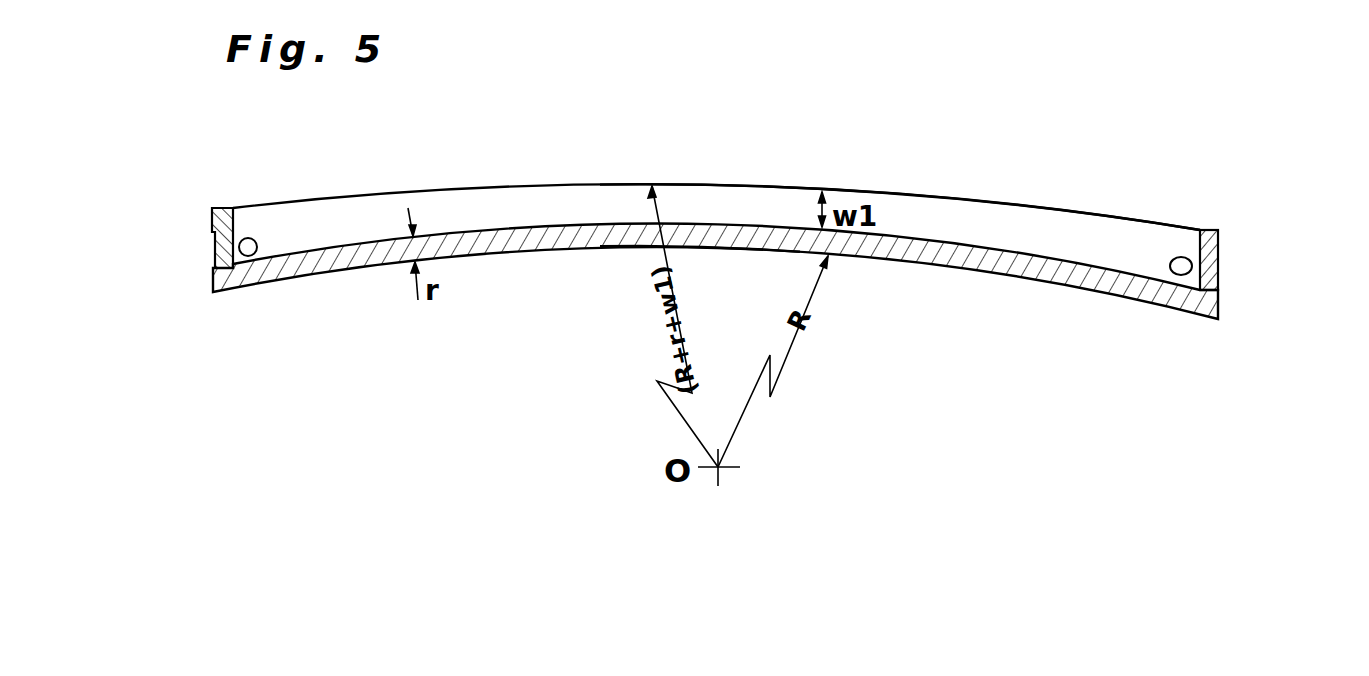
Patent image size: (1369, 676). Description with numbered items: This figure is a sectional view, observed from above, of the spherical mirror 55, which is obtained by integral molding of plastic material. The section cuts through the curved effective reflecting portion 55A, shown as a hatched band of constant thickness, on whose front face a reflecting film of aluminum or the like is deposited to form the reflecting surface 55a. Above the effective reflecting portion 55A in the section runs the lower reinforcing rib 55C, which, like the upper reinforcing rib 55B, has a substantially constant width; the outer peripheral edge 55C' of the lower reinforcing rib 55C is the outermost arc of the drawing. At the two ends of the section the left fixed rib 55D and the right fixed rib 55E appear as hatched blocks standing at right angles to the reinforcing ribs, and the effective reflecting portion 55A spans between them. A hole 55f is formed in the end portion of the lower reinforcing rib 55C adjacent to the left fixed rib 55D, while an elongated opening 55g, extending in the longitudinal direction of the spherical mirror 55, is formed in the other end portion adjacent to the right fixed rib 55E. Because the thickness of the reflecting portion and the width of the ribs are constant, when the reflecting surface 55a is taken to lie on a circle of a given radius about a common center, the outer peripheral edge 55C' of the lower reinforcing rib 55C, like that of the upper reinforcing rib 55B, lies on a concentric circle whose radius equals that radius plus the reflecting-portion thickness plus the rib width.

The spherical mirror 55 is at (503, 186).
The effective reflecting portion 55A is at (552, 230).
The reflecting surface 55a is at (712, 248).
The upper reinforcing rib 55B is at (810, 16).
The lower reinforcing rib 55C is at (1050, 169).
The outer peripheral edge of lower reinforcing rib 55C' is at (750, 150).
The left fixed rib 55D is at (213, 248).
The right fixed rib 55E is at (1218, 253).
The hole 55f is at (255, 251).
The elongated opening 55g is at (1181, 277).